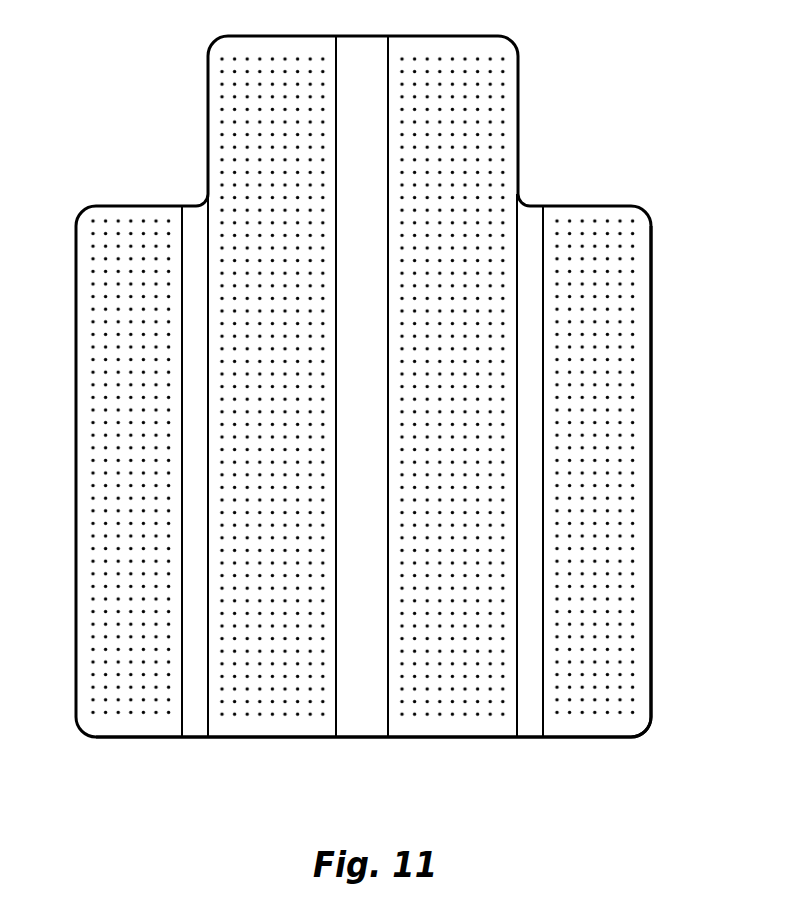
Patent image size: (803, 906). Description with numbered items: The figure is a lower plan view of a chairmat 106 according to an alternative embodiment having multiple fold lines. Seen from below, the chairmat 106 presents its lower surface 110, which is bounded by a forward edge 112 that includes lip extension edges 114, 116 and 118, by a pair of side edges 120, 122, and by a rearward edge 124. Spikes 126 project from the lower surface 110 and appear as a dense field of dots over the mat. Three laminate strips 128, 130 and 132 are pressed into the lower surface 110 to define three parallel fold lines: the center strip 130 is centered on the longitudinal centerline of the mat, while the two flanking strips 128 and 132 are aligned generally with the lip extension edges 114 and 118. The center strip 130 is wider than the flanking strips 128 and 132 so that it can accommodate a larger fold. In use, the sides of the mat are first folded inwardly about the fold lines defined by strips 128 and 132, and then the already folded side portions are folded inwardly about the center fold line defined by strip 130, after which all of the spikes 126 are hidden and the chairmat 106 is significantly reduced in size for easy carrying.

The chairmat 106 is at (660, 182).
The lower surface 110 is at (608, 558).
The forward edge 112 is at (141, 196).
The lip extension edge 114 is at (208, 145).
The lip extension edge 116 is at (296, 36).
The lip extension edge 118 is at (518, 123).
The side edge 120 is at (76, 513).
The side edge 122 is at (652, 425).
The rearward edge 124 is at (265, 739).
The spikes 126 is at (593, 715).
The laminate strip 128 is at (198, 675).
The laminate strip 130 is at (366, 618).
The laminate strip 132 is at (530, 628).